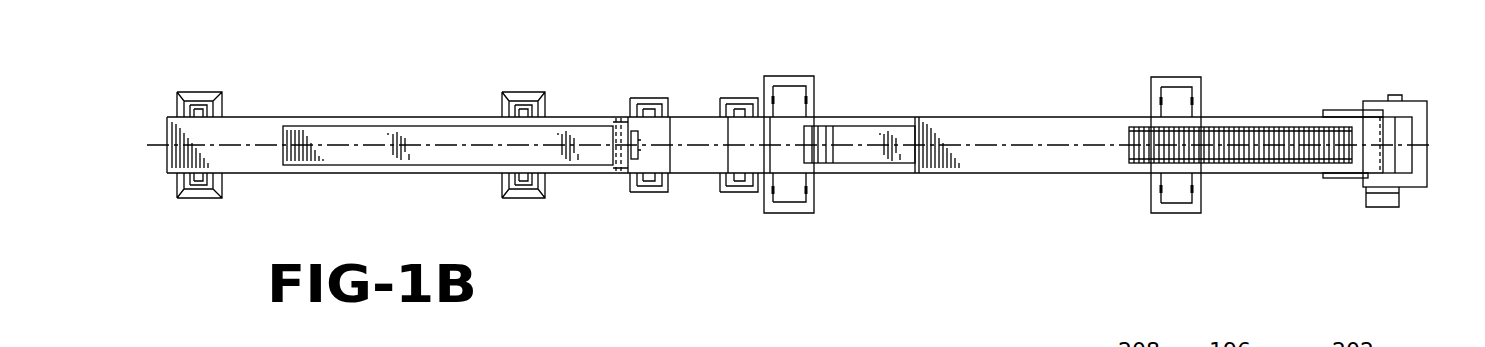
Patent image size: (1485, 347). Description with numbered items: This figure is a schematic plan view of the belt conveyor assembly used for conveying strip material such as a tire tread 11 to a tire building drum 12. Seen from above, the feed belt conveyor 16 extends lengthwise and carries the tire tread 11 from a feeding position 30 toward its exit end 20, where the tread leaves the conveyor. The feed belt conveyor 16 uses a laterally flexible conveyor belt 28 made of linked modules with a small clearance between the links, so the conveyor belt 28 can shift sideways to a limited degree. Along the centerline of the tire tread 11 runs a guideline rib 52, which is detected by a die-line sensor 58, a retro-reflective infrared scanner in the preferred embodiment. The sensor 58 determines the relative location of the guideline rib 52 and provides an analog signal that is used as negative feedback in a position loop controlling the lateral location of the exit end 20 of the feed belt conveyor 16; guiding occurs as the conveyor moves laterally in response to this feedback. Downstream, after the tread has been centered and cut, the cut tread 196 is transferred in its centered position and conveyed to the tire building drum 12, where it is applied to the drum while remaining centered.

The tire tread 11 is at (398, 128).
The tire building drum 12 is at (1413, 101).
The feed belt conveyor 16 is at (270, 165).
The exit end 20 is at (617, 118).
The conveyor belt 28 is at (292, 128).
The feeding position 30 is at (343, 126).
The guideline rib 52 is at (445, 145).
The die-line sensor 58 is at (637, 153).
The tread 196 is at (1243, 127).